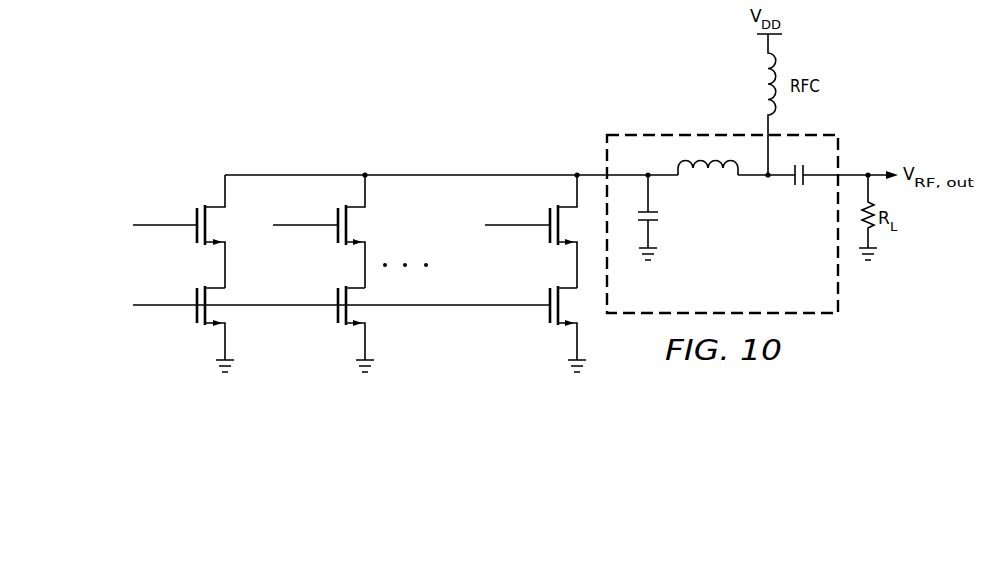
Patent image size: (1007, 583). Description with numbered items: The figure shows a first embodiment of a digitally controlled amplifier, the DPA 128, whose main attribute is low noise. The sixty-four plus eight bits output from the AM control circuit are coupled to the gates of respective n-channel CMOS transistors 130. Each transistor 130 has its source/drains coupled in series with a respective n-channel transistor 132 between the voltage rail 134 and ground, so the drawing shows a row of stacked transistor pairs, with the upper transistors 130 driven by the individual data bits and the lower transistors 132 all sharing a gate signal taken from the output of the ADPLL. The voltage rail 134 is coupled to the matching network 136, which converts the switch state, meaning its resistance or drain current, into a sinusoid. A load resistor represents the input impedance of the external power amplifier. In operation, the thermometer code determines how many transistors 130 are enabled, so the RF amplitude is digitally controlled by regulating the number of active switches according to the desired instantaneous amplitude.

The DPA 128 is at (292, 126).
The n-channel CMOS transistor 130 is at (550, 215).
The n-channel transistor 132 is at (550, 296).
The voltage rail 134 is at (415, 173).
The matching network 136 is at (679, 126).